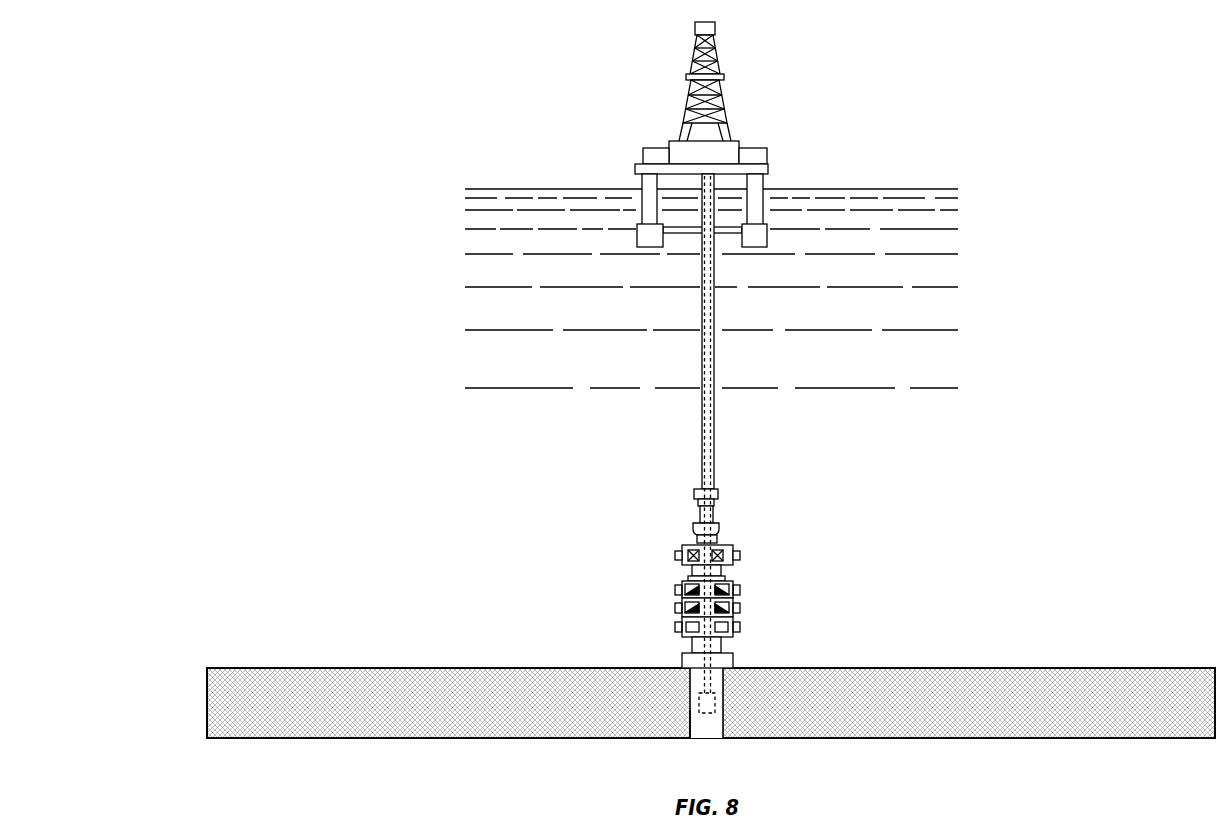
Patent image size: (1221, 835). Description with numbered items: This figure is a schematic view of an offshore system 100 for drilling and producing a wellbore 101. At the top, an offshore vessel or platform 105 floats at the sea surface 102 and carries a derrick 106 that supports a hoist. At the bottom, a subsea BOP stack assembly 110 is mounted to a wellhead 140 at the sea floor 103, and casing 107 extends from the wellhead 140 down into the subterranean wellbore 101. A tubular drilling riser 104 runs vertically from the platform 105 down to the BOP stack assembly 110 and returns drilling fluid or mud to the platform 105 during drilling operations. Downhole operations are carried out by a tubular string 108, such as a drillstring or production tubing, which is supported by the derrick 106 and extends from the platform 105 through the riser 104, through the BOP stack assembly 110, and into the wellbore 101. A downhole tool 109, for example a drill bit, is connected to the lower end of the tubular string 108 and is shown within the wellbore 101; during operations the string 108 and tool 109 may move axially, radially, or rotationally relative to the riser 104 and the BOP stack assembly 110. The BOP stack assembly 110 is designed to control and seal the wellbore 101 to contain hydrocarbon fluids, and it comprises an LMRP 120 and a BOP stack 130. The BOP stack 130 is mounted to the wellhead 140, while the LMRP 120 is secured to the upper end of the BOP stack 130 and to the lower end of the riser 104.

The offshore system 100 is at (1042, 78).
The wellbore 101 is at (715, 730).
The sea surface 102 is at (542, 189).
The sea floor 103 is at (300, 668).
The tubular drilling riser 104 is at (715, 368).
The offshore vessel or platform 105 is at (735, 140).
The derrick 106 is at (720, 58).
The casing 107 is at (700, 738).
The tubular string 108 is at (700, 415).
The downhole tool 109 is at (715, 702).
The subsea BOP stack assembly 110 is at (717, 572).
The LMRP 120 is at (632, 498).
The BOP stack 130 is at (632, 578).
The wellhead 140 is at (730, 660).